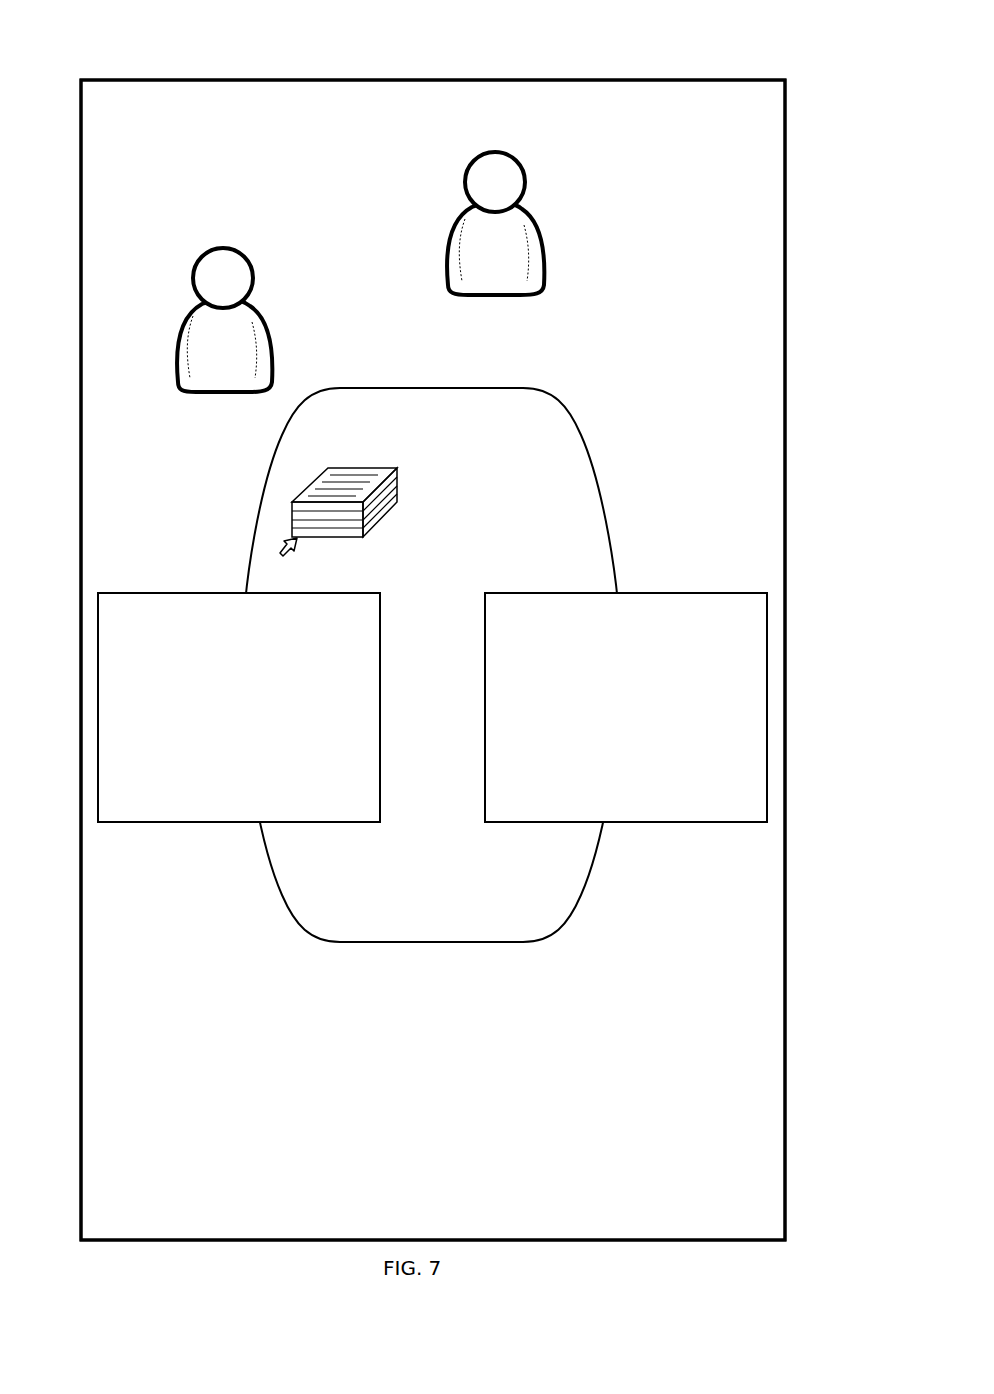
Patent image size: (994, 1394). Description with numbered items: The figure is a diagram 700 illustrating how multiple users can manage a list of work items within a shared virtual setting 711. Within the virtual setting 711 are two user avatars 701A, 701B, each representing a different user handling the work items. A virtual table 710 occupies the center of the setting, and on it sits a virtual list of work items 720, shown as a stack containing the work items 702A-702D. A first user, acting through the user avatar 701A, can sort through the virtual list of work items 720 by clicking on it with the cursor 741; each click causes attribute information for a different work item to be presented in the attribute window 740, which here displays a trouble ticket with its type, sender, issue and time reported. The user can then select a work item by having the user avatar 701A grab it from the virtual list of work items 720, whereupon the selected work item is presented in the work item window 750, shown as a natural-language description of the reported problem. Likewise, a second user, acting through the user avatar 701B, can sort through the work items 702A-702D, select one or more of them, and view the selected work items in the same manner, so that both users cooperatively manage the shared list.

The diagram 700 is at (440, 58).
The virtual setting 711 is at (608, 80).
The user avatar 701A is at (225, 248).
The user avatar 701B is at (497, 152).
The virtual table 710 is at (538, 388).
The work items 702A-702D is at (353, 468).
The virtual list of work items 720 is at (400, 490).
The cursor 741 is at (293, 557).
The attribute window 740 is at (133, 593).
The work item window 750 is at (655, 593).